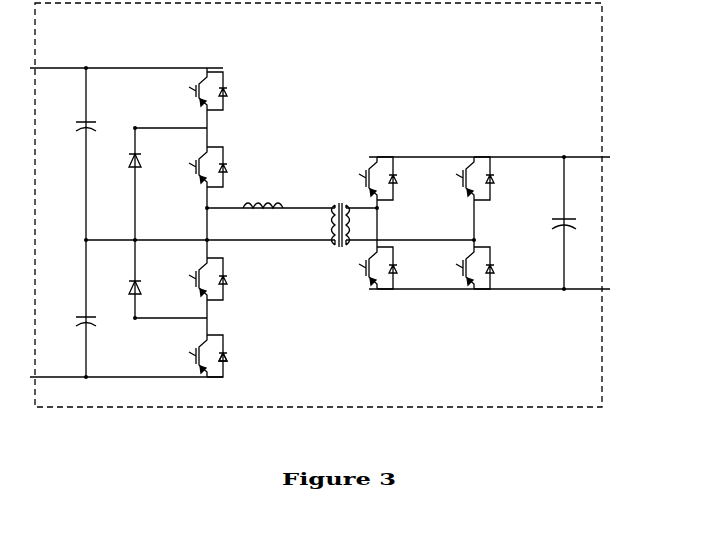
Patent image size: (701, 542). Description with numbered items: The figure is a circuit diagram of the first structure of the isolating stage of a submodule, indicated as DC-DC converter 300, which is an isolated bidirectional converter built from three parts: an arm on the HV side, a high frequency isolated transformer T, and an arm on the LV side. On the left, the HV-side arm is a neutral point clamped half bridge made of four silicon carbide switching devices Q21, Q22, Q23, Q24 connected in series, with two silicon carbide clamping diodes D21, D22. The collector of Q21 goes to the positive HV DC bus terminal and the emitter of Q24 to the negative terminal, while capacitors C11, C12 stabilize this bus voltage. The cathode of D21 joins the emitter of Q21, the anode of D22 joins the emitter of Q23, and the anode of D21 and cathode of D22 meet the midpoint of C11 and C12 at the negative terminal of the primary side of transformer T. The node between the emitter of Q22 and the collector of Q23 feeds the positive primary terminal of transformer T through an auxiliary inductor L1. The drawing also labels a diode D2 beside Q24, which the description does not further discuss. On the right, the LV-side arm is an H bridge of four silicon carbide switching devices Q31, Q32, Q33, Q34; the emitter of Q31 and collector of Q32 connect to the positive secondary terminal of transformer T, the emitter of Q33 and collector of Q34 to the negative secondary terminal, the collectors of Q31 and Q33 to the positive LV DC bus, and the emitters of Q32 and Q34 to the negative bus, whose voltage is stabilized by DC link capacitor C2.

The DC-DC converter 300 is at (318, 205).
The capacitor C11 is at (68, 126).
The capacitor C12 is at (68, 321).
The clamping diode D21 is at (118, 167).
The clamping diode D22 is at (118, 292).
The anti-parallel diode D2 is at (238, 358).
The switching device Q21 is at (188, 91).
The switching device Q22 is at (189, 168).
The switching device Q23 is at (189, 280).
The switching device Q24 is at (186, 356).
The switching device Q31 is at (351, 178).
The switching device Q32 is at (353, 268).
The switching device Q33 is at (452, 178).
The switching device Q34 is at (452, 268).
The auxiliary inductor L1 is at (263, 218).
The high frequency isolated transformer T is at (327, 225).
The DC link capacitor C2 is at (549, 227).